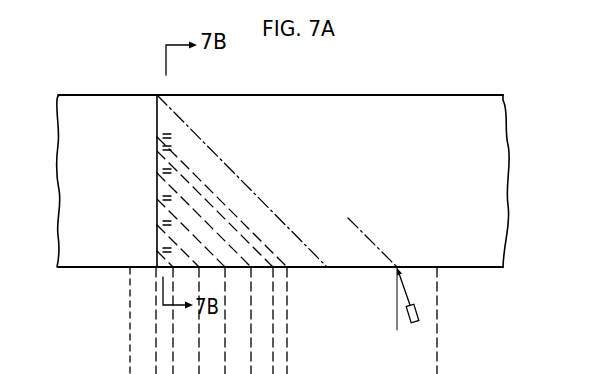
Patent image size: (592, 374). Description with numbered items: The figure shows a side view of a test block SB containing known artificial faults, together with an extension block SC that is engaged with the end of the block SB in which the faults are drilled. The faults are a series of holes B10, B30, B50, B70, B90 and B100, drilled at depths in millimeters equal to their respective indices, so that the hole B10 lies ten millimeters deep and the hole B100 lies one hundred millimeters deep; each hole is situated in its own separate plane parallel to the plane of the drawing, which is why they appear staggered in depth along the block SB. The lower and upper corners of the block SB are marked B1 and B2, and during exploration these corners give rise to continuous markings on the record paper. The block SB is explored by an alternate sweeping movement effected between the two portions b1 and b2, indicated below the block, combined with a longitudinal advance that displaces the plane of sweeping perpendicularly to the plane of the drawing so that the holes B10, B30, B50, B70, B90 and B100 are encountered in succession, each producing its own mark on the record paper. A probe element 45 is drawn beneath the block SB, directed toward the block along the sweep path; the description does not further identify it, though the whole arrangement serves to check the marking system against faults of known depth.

The extension block SC is at (65, 123).
The test block SB is at (337, 118).
The upper corner of block SB B2 is at (157, 95).
The lower corner of block SB B1 is at (155, 268).
The first sweep portion b1 is at (126, 268).
The second sweep portion b2 is at (438, 268).
The hole at 10 mm depth B10 is at (157, 250).
The hole at 30 mm depth B30 is at (157, 224).
The hole at 50 mm depth B50 is at (157, 198).
The hole at 70 mm depth B70 is at (157, 171).
The hole at 90 mm depth B90 is at (157, 144).
The hole at 100 mm depth B100 is at (157, 131).
The sensor / detector head 45 is at (410, 322).